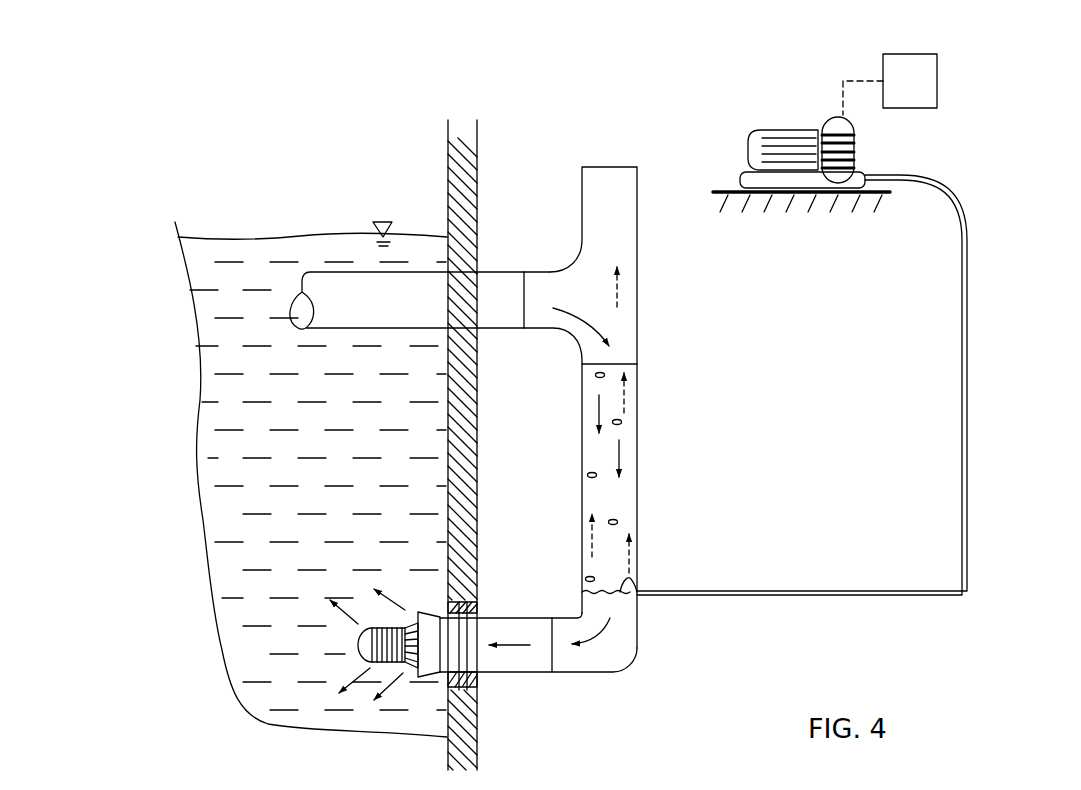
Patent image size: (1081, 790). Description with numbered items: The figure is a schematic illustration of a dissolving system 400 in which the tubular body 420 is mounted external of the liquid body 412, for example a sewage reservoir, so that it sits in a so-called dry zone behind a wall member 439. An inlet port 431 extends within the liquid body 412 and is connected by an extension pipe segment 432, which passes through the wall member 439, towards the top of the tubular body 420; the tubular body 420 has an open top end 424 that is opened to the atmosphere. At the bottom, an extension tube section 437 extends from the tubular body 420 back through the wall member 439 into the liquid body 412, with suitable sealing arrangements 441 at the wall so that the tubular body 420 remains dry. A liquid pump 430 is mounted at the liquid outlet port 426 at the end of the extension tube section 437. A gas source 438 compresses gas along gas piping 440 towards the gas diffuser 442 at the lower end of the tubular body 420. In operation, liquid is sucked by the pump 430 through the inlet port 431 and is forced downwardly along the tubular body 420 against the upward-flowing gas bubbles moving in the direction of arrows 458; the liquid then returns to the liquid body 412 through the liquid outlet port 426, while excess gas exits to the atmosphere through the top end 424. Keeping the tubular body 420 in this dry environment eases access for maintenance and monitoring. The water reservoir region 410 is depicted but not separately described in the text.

The dissolving system 400 is at (243, 103).
The water reservoir 410 is at (278, 455).
The liquid body 412 is at (208, 305).
The tubular body 420 is at (654, 496).
The open top end 424 is at (608, 165).
The liquid outlet port 426 is at (416, 620).
The liquid pump 430 is at (363, 632).
The inlet port 431 is at (260, 338).
The extension pipe segment 432 is at (439, 407).
The extension tube section 437 is at (525, 660).
The gas source 438 is at (777, 130).
The wall member 439 is at (460, 480).
The gas piping 440 is at (967, 405).
The sealing arrangements 441 is at (477, 682).
The gas diffuser 442 is at (640, 592).
The arrows 458 is at (623, 396).